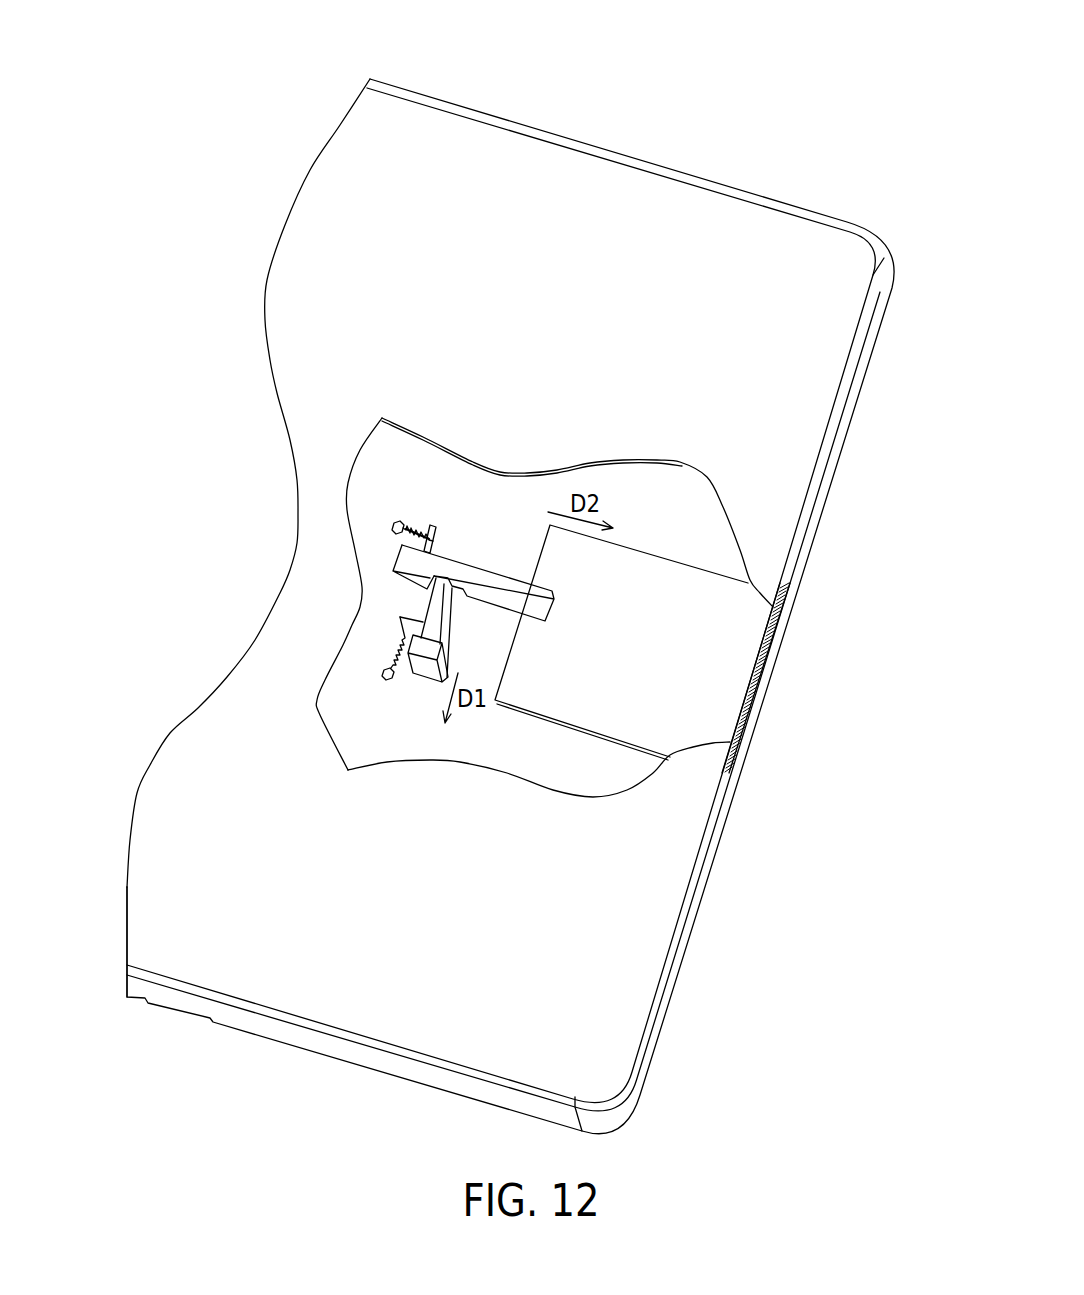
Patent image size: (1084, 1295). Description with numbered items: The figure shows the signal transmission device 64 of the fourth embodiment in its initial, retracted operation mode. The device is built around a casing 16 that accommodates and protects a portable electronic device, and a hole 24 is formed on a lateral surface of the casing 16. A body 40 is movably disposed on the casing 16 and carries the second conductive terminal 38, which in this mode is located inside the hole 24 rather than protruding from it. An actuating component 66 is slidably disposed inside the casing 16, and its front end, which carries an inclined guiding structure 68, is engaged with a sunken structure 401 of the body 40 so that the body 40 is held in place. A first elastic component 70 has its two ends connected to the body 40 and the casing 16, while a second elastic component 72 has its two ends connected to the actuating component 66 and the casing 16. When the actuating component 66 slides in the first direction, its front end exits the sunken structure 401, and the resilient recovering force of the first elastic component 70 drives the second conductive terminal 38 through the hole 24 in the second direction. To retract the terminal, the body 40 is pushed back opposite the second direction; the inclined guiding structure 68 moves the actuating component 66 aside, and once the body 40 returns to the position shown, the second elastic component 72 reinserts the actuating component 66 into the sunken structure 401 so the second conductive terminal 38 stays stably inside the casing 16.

The signal transmission device 64 is at (693, 75).
The casing 16 is at (720, 208).
The second conductive terminal 38 is at (750, 642).
The hole 24 is at (735, 778).
The body 40 is at (483, 575).
The sunken structure 401 is at (431, 570).
The inclined guiding structure 68 is at (458, 598).
The actuating component 66 is at (425, 673).
The first elastic component 70 is at (418, 520).
The second elastic component 72 is at (390, 641).